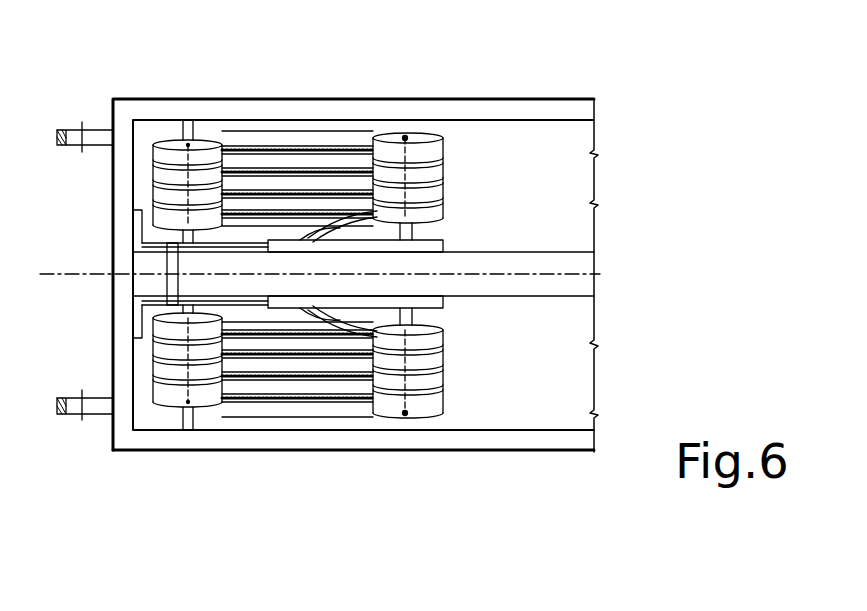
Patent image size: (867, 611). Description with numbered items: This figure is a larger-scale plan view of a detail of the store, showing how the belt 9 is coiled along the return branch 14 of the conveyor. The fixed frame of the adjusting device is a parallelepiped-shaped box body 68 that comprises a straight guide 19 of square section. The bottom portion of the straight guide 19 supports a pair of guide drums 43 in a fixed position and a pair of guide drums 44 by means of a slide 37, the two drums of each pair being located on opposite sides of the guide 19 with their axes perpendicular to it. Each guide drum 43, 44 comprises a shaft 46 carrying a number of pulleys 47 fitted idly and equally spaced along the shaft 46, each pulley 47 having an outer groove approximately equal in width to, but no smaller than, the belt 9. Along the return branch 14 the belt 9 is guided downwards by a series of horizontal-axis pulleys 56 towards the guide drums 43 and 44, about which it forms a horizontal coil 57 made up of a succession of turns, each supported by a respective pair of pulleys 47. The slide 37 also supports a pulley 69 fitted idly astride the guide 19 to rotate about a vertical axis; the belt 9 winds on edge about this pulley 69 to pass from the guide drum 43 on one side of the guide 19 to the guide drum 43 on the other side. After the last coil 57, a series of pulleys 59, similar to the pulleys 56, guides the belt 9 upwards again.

The belt 9 is at (293, 133).
The return branch 14 is at (207, 472).
The straight guide 19 is at (570, 260).
The slide 37 is at (438, 305).
The guide drum 43 is at (146, 188).
The guide drum 44 is at (449, 184).
The shaft 46 is at (190, 120).
The pulley 47 is at (158, 140).
The horizontal-axis pulley 56 is at (72, 130).
The horizontal coil 57 is at (353, 93).
The pulley 59 is at (70, 411).
The box body 68 is at (290, 446).
The pulley 69 is at (322, 310).